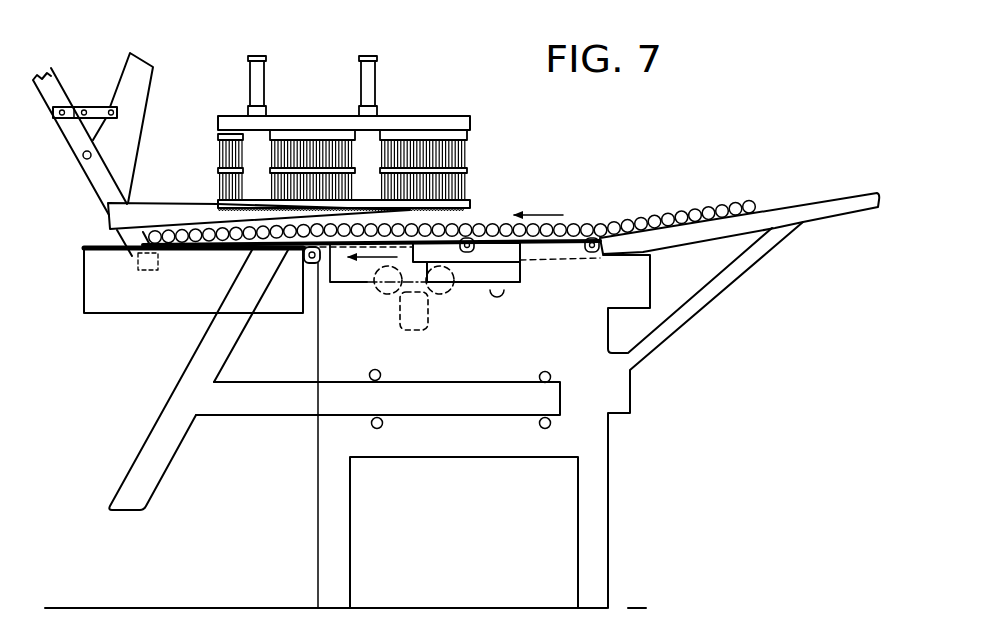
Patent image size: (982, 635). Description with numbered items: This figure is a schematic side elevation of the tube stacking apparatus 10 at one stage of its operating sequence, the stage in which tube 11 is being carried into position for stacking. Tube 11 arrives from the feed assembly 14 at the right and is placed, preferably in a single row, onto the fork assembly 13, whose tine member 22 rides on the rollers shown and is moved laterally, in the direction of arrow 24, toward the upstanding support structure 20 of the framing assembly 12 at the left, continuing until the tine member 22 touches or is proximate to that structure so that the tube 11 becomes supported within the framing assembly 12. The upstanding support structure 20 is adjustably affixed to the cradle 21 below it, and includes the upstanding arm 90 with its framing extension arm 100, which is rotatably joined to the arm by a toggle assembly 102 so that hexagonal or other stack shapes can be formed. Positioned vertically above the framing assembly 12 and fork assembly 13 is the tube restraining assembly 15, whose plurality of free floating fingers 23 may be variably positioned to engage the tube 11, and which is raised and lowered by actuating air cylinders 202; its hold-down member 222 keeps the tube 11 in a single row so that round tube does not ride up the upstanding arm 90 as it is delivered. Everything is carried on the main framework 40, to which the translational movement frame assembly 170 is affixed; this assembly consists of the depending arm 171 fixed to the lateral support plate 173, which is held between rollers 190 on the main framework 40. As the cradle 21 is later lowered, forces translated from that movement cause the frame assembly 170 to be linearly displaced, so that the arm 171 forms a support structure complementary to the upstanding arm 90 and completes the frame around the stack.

The tube stacking apparatus 10 is at (739, 351).
The tube 11 is at (612, 224).
The framing assembly 12 is at (48, 145).
The fork assembly 13 is at (565, 269).
The feed assembly 14 is at (826, 230).
The tube restraining assembly 15 is at (374, 106).
The upstanding support structure 20 is at (131, 129).
The cradle 21 is at (97, 298).
The tine member 22 is at (223, 253).
The free floating fingers 23 is at (469, 150).
The arrow 24 is at (363, 258).
The main framework 40 is at (620, 551).
The upstanding arm 90 is at (103, 182).
The framing extension arm 100 is at (140, 74).
The toggle assembly 102 is at (96, 84).
The translational movement frame assembly 170 is at (307, 389).
The depending arm 171 is at (137, 475).
The lateral support plate 173 is at (270, 408).
The rollers 190 is at (381, 374).
The actuating air cylinder 202 is at (363, 83).
The hold-down member 222 is at (108, 221).